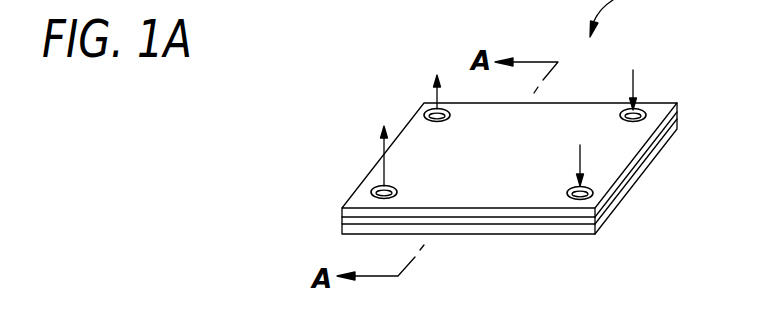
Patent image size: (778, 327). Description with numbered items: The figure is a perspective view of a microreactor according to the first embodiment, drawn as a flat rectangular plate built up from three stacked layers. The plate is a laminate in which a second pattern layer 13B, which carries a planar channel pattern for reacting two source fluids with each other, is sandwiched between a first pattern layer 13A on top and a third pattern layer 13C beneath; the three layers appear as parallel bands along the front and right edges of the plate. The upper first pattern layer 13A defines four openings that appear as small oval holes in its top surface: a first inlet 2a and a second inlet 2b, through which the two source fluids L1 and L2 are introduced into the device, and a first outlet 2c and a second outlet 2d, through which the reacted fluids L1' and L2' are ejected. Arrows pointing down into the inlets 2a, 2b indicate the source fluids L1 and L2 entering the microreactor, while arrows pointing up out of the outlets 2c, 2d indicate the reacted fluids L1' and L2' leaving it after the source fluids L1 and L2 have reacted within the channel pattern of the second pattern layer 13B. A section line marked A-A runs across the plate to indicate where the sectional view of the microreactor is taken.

The first inlet 2a is at (640, 110).
The second inlet 2b is at (593, 191).
The first outlet 2c is at (428, 108).
The second outlet 2d is at (380, 185).
The first pattern layer 13A is at (656, 104).
The second pattern layer 13B is at (678, 118).
The third pattern layer 13C is at (671, 140).
The source fluid L1 is at (633, 77).
The reacted fluid L1' is at (437, 78).
The source fluid L2 is at (579, 153).
The reacted fluid L2' is at (386, 141).